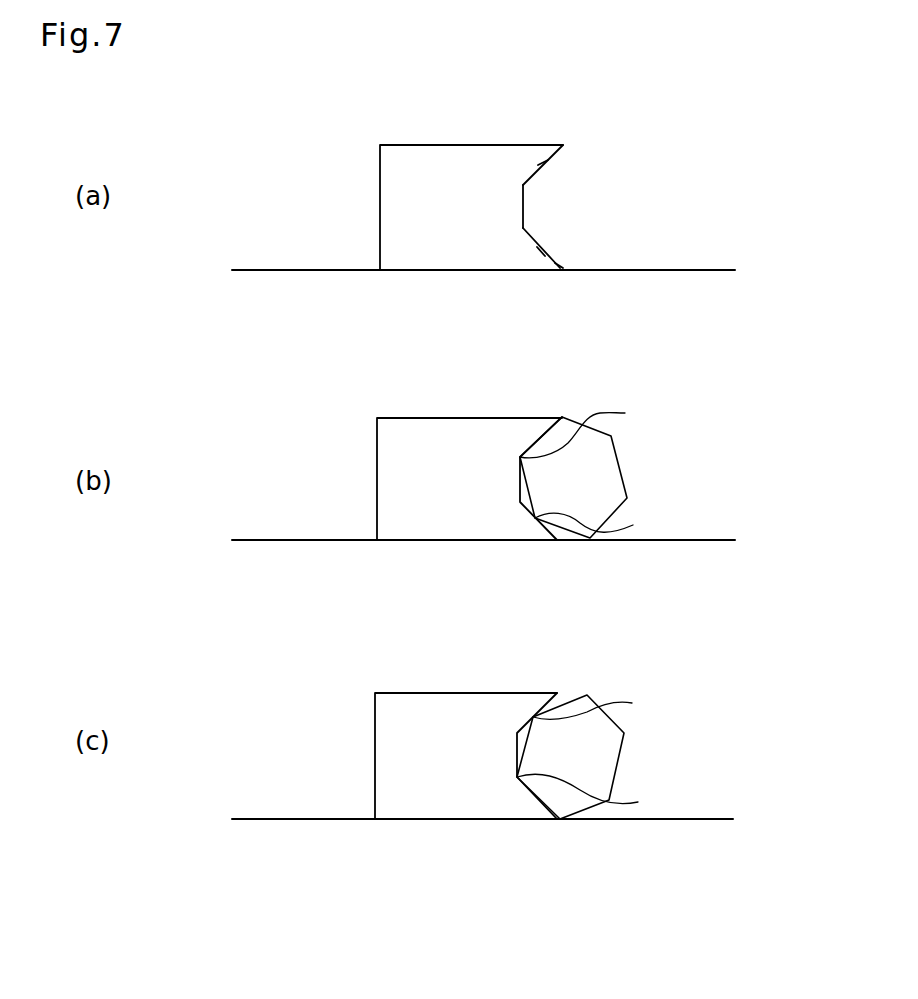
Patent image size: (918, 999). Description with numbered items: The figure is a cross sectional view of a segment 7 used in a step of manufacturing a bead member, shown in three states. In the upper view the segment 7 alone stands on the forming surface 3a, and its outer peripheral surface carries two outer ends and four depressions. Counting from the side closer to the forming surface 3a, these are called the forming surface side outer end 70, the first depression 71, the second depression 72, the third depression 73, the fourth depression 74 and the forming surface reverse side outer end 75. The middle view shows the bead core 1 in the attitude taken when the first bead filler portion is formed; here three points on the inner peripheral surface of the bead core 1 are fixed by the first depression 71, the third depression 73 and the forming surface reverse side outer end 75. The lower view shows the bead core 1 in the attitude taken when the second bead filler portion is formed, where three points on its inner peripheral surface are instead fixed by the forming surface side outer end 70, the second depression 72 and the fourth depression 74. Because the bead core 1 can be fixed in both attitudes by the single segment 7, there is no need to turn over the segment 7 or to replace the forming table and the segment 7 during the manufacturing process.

The segment 7 is at (433, 145).
The forming surface side outer end 70 is at (563, 268).
The first depression 71 is at (537, 247).
The second depression 72 is at (523, 228).
The third depression 73 is at (523, 185).
The fourth depression 74 is at (538, 165).
The forming surface reverse side outer end 75 is at (563, 145).
The bead core 1 is at (607, 472).
The forming surface 3a is at (708, 270).